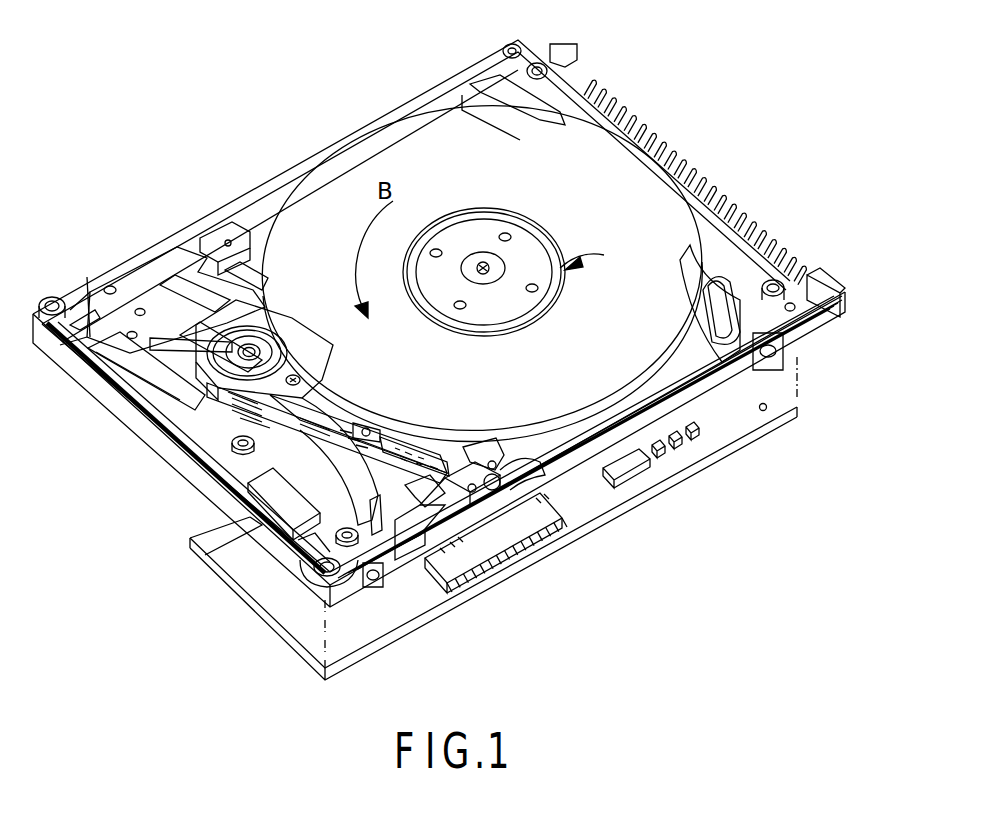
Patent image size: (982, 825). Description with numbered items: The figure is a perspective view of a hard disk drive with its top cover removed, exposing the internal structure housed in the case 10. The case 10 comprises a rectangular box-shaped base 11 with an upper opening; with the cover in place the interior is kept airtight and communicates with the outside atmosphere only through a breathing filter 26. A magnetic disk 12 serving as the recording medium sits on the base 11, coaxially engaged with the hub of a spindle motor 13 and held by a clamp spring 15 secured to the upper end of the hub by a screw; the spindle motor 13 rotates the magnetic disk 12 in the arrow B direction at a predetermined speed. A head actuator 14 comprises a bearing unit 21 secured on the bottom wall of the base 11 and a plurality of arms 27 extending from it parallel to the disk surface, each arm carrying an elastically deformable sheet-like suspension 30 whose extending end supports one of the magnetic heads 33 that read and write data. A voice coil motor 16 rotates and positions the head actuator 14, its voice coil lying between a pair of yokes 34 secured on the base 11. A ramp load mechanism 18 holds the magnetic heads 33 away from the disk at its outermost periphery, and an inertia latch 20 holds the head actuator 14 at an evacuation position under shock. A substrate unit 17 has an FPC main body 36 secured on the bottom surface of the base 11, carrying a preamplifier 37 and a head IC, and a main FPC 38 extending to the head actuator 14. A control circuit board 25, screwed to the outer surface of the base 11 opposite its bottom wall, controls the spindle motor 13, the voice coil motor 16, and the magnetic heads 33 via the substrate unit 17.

The case 10 is at (469, 61).
The base 11 is at (400, 505).
The magnetic disk 12 is at (400, 148).
The spindle motor 13 is at (596, 255).
The head actuator 14 is at (292, 380).
The clamp spring 15 is at (512, 222).
The voice coil motor (VCM) 16 is at (148, 276).
The substrate unit 17 is at (235, 466).
The ramp load mechanism 18 is at (492, 482).
The inertia latch 20 is at (211, 232).
The bearing unit 21 is at (277, 330).
The control circuit board 25 is at (600, 503).
The breathing filter 26 is at (713, 322).
The arms 27 is at (350, 416).
The suspensions 30 is at (400, 445).
The magnetic heads 33 is at (445, 482).
The yokes 34 is at (135, 367).
The FPC main body 36 is at (310, 540).
The preamplifier 37 is at (250, 517).
The main FPC 38 is at (332, 443).